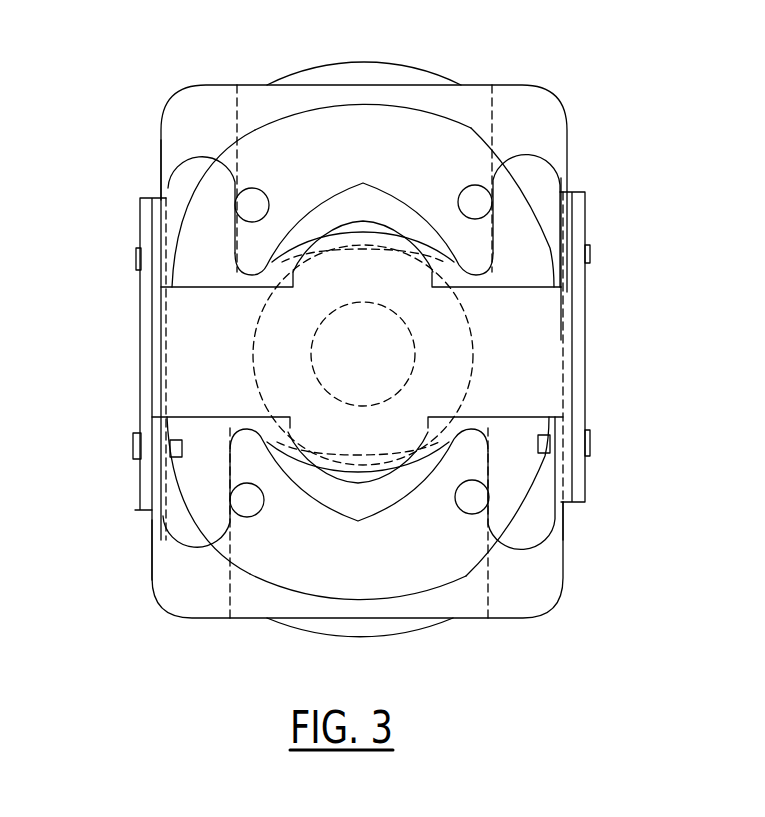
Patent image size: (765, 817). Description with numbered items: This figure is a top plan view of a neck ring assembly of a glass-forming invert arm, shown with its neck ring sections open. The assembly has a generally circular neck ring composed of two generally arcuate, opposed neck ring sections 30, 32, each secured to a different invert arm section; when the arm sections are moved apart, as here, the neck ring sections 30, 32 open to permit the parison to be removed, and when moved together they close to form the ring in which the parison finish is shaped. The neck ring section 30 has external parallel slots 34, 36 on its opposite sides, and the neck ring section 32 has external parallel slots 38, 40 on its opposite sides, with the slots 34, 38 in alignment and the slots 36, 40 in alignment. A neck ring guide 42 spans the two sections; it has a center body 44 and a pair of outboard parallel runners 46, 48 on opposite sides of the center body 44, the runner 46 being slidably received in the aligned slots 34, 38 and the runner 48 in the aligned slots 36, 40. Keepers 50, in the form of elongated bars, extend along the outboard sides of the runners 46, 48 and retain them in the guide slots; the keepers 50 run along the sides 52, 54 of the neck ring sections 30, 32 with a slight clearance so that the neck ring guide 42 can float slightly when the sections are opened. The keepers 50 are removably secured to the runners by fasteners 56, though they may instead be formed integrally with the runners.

The neck ring section 30 is at (173, 578).
The neck ring section 32 is at (548, 97).
The external parallel slot 34 is at (488, 587).
The external parallel slot 36 is at (230, 587).
The external parallel slot 38 is at (497, 113).
The external parallel slot 40 is at (237, 112).
The neck ring guide 42 is at (533, 335).
The center body 44 is at (260, 352).
The runner 46 is at (542, 167).
The runner 48 is at (177, 170).
The keeper 50 is at (140, 345).
The side of neck ring section 52 is at (568, 177).
The side of neck ring section 54 is at (162, 174).
The fastener 56 is at (138, 262).